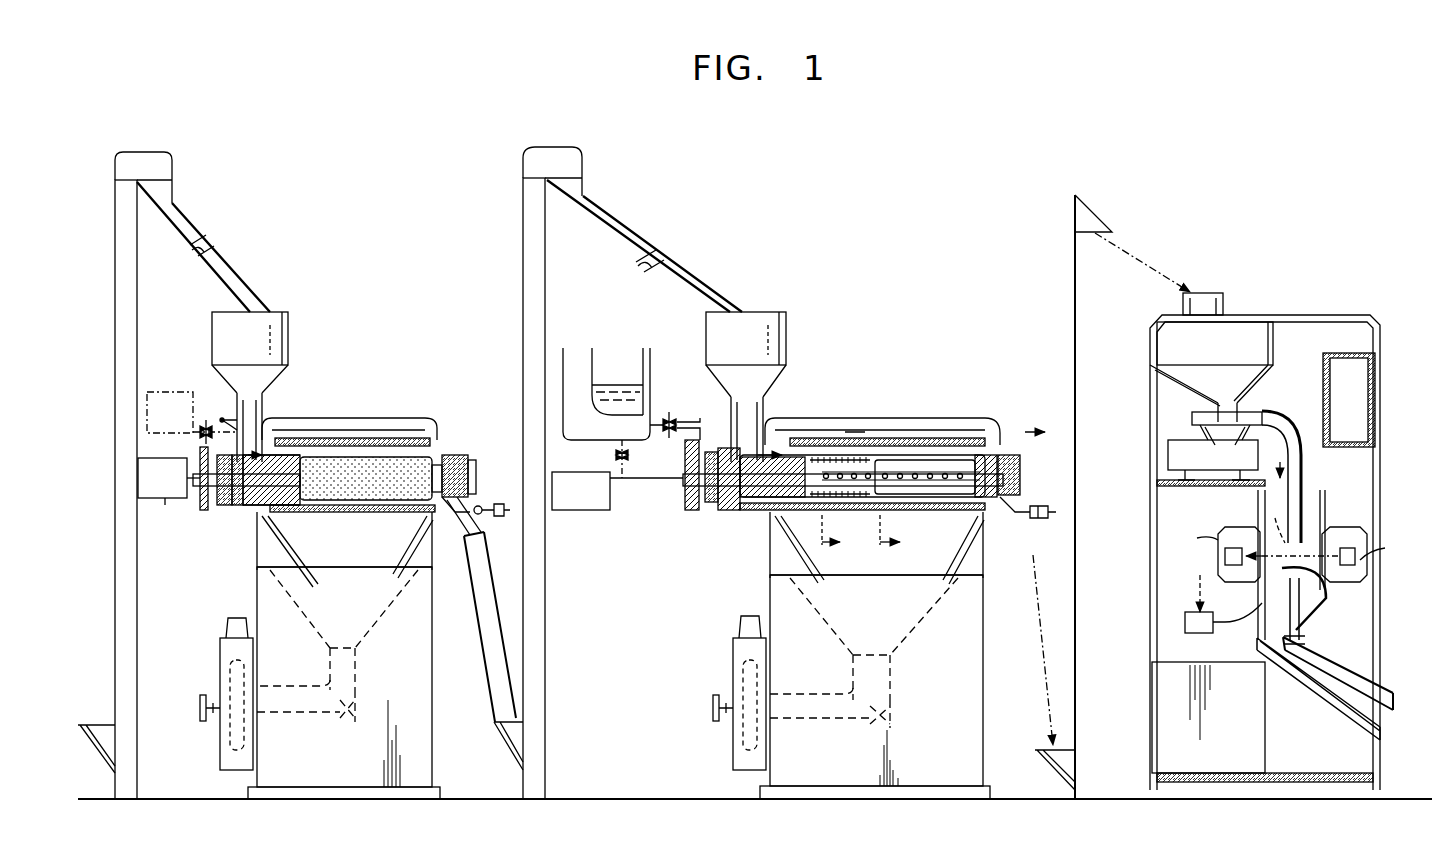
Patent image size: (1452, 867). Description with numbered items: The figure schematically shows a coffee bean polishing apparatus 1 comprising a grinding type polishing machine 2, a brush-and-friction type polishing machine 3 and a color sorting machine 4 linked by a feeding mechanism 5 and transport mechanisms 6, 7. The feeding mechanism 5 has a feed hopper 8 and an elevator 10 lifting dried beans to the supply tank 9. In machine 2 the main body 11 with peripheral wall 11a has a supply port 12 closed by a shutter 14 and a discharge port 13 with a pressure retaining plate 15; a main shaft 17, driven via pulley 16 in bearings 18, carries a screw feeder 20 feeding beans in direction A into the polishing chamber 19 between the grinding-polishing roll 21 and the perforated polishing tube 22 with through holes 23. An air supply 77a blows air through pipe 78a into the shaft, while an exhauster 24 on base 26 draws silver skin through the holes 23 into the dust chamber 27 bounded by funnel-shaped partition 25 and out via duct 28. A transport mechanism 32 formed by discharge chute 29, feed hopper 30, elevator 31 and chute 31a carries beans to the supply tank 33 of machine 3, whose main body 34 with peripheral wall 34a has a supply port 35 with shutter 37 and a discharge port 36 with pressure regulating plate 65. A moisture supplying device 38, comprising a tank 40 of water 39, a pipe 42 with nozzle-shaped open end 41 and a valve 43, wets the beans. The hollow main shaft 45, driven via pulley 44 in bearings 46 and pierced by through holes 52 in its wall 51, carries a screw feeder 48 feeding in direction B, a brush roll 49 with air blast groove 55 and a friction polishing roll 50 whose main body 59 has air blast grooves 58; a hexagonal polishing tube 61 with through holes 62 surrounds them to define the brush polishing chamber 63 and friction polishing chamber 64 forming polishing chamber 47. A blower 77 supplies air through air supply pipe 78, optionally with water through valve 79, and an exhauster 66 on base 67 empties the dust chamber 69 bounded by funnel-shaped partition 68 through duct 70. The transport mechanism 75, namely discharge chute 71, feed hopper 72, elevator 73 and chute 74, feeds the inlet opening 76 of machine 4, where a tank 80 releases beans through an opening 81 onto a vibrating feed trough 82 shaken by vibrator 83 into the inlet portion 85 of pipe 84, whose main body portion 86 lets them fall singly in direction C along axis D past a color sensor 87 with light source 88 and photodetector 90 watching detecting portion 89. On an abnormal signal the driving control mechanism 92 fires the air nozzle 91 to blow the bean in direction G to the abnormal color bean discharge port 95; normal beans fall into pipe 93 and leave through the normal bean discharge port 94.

The coating apparatus 1 is at (437, 122).
The grinding type polishing machine 2 is at (328, 368).
The brush-and-friction type polishing machine 3 is at (862, 338).
The color sorting machine 4 is at (1332, 290).
The feeding mechanism 5 is at (113, 488).
The transport mechanism 6 is at (510, 318).
The transport mechanism 7 is at (1057, 335).
The feed hopper 8 is at (100, 760).
The supply tank 9 is at (276, 312).
The elevator 10 is at (115, 392).
The main body 11 is at (240, 508).
The peripheral wall 11a is at (376, 418).
The supply port 12 is at (262, 412).
The discharge port 13 is at (436, 530).
The shutter 14 is at (214, 420).
The pressure retaining plate 15 is at (478, 515).
The pulley 16 is at (203, 500).
The main shaft 17 is at (228, 490).
The bearings 18 is at (455, 455).
The polishing chamber 19 is at (342, 436).
The screw feeder 20 is at (248, 508).
The grinding-polishing roll 21 is at (398, 457).
The polishing tube 22 is at (388, 513).
The through holes 23 is at (335, 513).
The exhauster 24 is at (220, 680).
The funnel-shaped partition 25 is at (375, 570).
The base 26 is at (257, 602).
The dust chamber 27 is at (309, 548).
The duct 28 is at (311, 713).
The discharge chute 29 is at (480, 590).
The feed hopper 30 is at (512, 755).
The elevator 31 is at (523, 242).
The chute 31a is at (622, 225).
The transport mechanism 32 is at (510, 193).
The supply tank 33 is at (752, 322).
The main body 34 is at (850, 433).
The peripheral wall 34a is at (875, 410).
The supply port 35 is at (763, 422).
The discharge port 36 is at (1000, 520).
The shutter 37 is at (714, 418).
The moisture supplying device 38 is at (600, 343).
The water 39 is at (617, 385).
The tank 40 is at (580, 362).
The open end 41 is at (714, 440).
The pipe 42 is at (660, 410).
The valve 43 is at (667, 438).
The pulley 44 is at (688, 500).
The main shaft 45 is at (697, 512).
The bearings 46 is at (718, 505).
The polishing chamber 47 is at (872, 452).
The screw feeder 48 is at (745, 520).
The brush roll 49 is at (778, 513).
The friction polishing roll 50 is at (870, 520).
The wall 51 is at (920, 517).
The through holes 52 is at (917, 455).
The air blast groove 55 is at (857, 455).
The air blast grooves 58 is at (960, 455).
The friction polishing roll main body 59 is at (968, 508).
The hexagonal polishing tube 61 is at (988, 420).
The through holes 62 is at (820, 430).
The brush polishing chamber 63 is at (800, 440).
The friction polishing chamber 64 is at (937, 440).
The pressure regulating plate 65 is at (1040, 520).
The exhauster 66 is at (733, 742).
The base 67 is at (760, 776).
The funnel-shaped partition 68 is at (792, 578).
The dust chamber 69 is at (960, 585).
The duct 70 is at (880, 690).
The discharge chute 71 is at (1040, 682).
The feed hopper 72 is at (1040, 770).
The elevator 73 is at (1075, 255).
The chute 74 is at (1138, 246).
The transport mechanism 75 is at (1067, 233).
The inlet opening 76 is at (1210, 298).
The blower 77 is at (590, 510).
The air supply 77a is at (165, 505).
The air supply pipe 78 is at (642, 478).
The pipe 78a is at (197, 462).
The valve 79 is at (614, 455).
The tank 80 is at (1162, 345).
The opening 81 is at (1200, 399).
The vibrating feed trough 82 is at (1250, 414).
The vibrator 83 is at (1172, 460).
The pipe 84 is at (1298, 470).
The inlet portion 85 is at (1280, 428).
The main body portion 86 is at (1302, 486).
The color sensor 87 is at (1372, 525).
The light source 88 is at (1348, 554).
The detecting portion 89 is at (1320, 527).
The photodetector 90 is at (1215, 552).
The air nozzle 91 is at (1258, 600).
The driving control mechanism 92 is at (1195, 634).
The pipe 93 is at (1265, 630).
The normal bean discharge port 94 is at (1393, 693).
The abnormal color bean discharge port 95 is at (1350, 728).